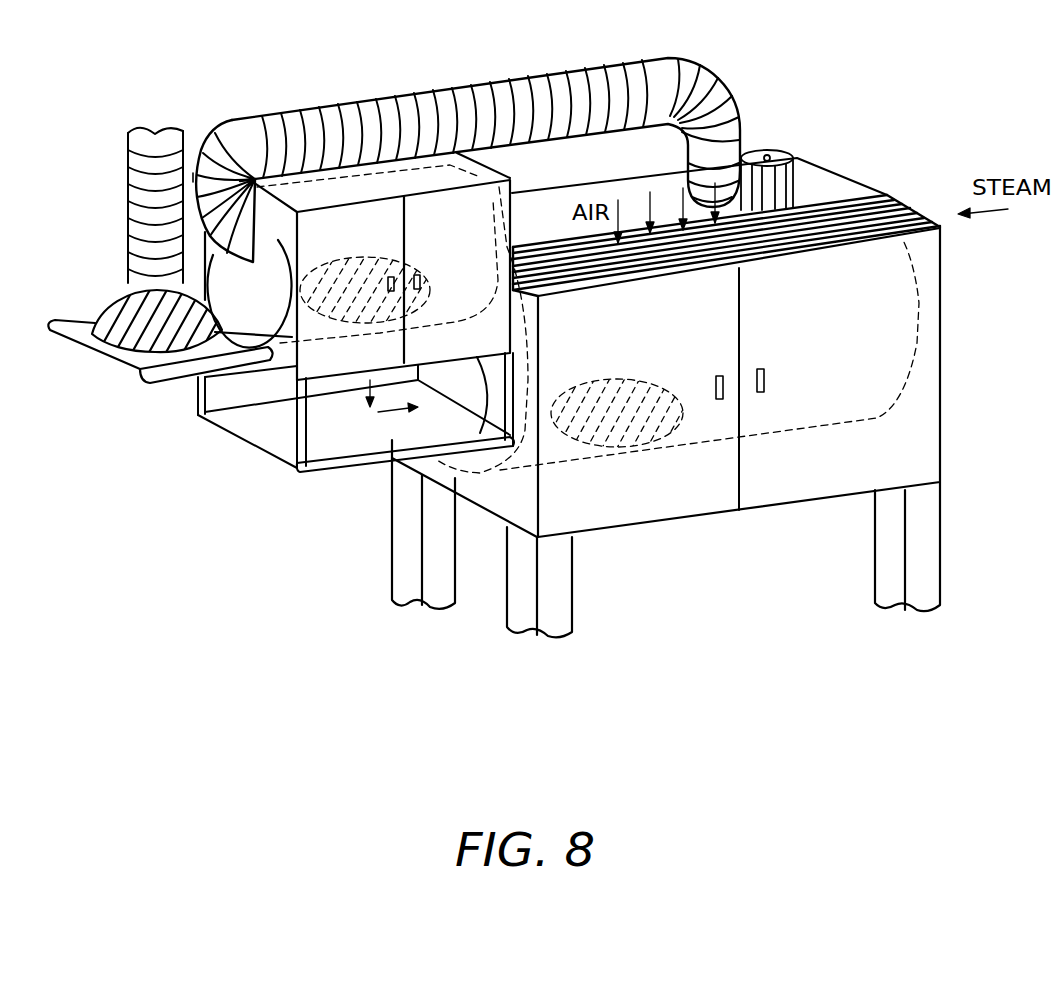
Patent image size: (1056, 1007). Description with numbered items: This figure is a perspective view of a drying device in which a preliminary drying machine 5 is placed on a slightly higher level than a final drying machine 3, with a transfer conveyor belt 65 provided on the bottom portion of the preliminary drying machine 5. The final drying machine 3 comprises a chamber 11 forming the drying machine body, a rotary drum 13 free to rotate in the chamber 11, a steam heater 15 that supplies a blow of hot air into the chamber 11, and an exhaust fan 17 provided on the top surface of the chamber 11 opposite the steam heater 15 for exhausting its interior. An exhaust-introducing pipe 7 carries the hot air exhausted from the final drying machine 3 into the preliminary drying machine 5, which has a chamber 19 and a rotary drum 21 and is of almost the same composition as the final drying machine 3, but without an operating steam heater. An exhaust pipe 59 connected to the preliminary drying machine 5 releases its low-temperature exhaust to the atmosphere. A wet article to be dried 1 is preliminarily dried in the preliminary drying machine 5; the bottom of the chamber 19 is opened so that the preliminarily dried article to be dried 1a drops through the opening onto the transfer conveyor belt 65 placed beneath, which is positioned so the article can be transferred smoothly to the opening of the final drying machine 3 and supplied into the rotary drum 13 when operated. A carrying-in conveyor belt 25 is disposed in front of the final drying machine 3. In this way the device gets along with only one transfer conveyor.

The article to be dried 1 is at (112, 313).
The preliminarily dried article to be dried 1a is at (338, 260).
The final drying machine 3 is at (706, 530).
The preliminary drying machine 5 is at (225, 117).
The exhaust-introducing pipe 7 is at (424, 105).
The chamber 11 is at (597, 503).
The rotary drum 13 is at (813, 441).
The steam heater 15 is at (877, 193).
The exhaust fan 17 is at (760, 150).
The chamber 19 is at (193, 173).
The rotary drum 21 is at (516, 166).
The carrying-in conveyor belt 25 is at (90, 357).
The exhaust pipe 59 is at (128, 223).
The transfer conveyor belt 65 is at (348, 462).